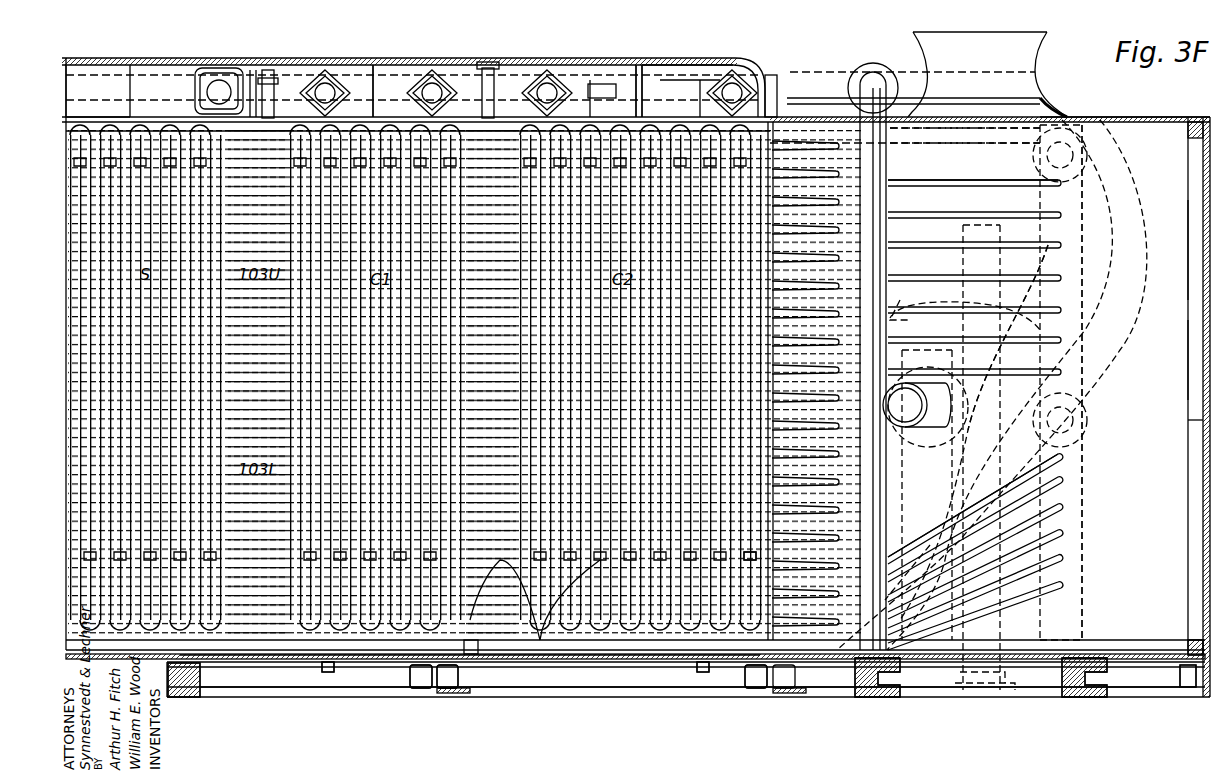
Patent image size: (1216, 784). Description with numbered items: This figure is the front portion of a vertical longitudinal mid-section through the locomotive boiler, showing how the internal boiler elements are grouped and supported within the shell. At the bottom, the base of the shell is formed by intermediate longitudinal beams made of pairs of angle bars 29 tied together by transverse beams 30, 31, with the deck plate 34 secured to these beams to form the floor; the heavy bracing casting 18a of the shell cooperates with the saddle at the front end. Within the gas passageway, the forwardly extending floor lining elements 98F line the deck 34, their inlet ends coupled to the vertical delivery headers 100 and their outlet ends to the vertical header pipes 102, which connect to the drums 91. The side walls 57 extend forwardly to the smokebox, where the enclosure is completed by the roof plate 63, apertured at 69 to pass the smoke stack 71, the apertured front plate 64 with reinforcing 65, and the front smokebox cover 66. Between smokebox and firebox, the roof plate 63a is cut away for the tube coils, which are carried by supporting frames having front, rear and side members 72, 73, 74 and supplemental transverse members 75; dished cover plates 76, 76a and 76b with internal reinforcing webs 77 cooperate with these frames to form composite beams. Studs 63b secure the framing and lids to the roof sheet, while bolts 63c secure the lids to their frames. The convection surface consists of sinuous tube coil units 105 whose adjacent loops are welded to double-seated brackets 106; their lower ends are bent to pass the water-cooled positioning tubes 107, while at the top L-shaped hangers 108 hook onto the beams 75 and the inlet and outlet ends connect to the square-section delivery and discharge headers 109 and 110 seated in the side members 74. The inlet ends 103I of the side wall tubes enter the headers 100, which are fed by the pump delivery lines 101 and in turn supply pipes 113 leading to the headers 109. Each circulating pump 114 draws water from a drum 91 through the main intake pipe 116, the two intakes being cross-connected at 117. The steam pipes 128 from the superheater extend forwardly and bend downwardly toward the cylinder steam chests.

The cover plate 76b is at (150, 50).
The roof plate 63a is at (180, 80).
The studs 63b is at (252, 70).
The bolts or studs 63c is at (270, 78).
The transverse discharge header 110 is at (318, 70).
The cover plate 76a is at (376, 65).
The transverse delivery header 109 is at (438, 70).
The rear frame member 73 is at (496, 72).
The supplemental transverse member 75 is at (590, 80).
The internal reinforcing web 77 is at (638, 65).
The cover plate 76 is at (650, 65).
The side frame member 74 is at (672, 82).
The L-shaped hanger 108 is at (604, 84).
The front frame member 72 is at (775, 80).
The vertical header pipe 102 is at (885, 500).
The smoke stack 71 is at (987, 74).
The steam pipe 128 is at (1052, 100).
The roof plate 63 is at (1125, 117).
The pipe 113 is at (935, 143).
The aperture 69 is at (990, 125).
The inlet ends of side wall tubes 103I is at (938, 183).
The drum 91 is at (1042, 262).
The apertured front plate 64 is at (1188, 230).
The side wall 57 is at (1167, 360).
The cross-connection 117 is at (925, 398).
The pump delivery line 101 is at (983, 402).
The front smokebox cover 66 is at (1203, 423).
The vertical delivery header 100 is at (1082, 527).
The main intake pipe 116 is at (919, 572).
The reinforcing 65 is at (1190, 640).
The water-cooled positioning tube 107 is at (758, 556).
The angle bars 29 is at (690, 675).
The deck plate 34 is at (283, 660).
The forwardly extending floor lining elements 98F is at (228, 655).
The transverse beam 31 is at (432, 698).
The circulating pump 114 is at (468, 690).
The tube coil unit 105 is at (528, 660).
The double-seated bracket 106 is at (620, 640).
The bracing casting 18a is at (1068, 685).
The transverse beam 30 is at (1192, 690).